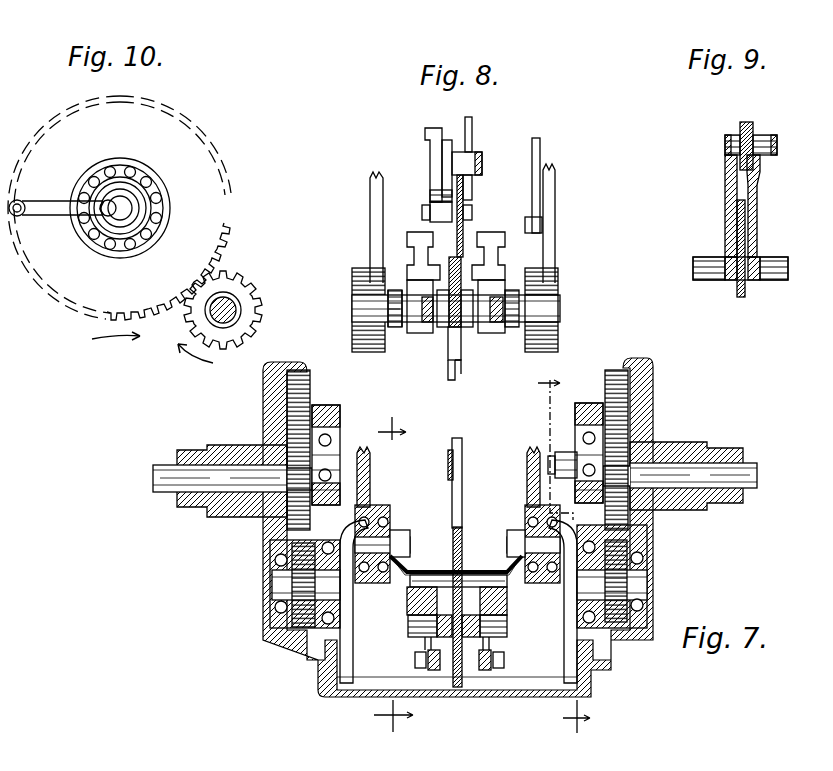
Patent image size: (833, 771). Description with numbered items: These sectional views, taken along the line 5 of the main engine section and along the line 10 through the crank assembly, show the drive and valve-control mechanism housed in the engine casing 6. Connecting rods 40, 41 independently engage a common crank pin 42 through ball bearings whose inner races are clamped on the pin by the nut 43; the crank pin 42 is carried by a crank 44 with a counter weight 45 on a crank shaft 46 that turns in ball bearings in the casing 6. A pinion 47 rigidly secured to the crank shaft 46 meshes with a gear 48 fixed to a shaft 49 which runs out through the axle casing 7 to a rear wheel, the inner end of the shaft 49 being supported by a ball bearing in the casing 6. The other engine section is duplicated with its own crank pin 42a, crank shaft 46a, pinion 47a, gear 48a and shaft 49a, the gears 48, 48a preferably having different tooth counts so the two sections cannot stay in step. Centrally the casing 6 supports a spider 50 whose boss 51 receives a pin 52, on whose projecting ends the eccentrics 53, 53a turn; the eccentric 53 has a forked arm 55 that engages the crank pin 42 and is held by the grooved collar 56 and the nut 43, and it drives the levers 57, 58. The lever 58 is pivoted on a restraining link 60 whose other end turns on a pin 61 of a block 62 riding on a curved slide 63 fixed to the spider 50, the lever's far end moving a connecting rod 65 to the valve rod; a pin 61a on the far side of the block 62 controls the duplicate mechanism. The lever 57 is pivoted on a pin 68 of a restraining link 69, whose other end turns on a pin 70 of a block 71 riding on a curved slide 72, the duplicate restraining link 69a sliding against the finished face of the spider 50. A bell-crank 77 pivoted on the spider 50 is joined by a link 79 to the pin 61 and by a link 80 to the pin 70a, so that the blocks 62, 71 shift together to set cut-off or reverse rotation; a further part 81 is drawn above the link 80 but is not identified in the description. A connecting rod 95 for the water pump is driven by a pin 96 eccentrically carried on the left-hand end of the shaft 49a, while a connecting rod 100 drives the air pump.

In FIG. 7, the section line 5— 5 is at (393, 574).
In FIG. 7, the casing 6 is at (338, 697).
In FIG. 7, the axle casing 7 is at (185, 455).
In FIG. 7, the section line 10— 10 is at (560, 560).
In FIG. 7, the connecting rod 40 is at (370, 505).
In FIG. 7, the connecting rod 41 is at (370, 467).
In FIG. 7, the crank pin 42 is at (377, 543).
In FIG. 7, the crank pin 42a is at (530, 540).
In FIG. 7, the nut 43 is at (407, 537).
In FIG. 7, the crank 44 is at (349, 592).
In FIG. 7, the counter weight 45 is at (353, 665).
In FIG. 7, the crank shaft 46 is at (300, 640).
In FIG. 10, the crank shaft 46a is at (241, 307).
In FIG. 7, the crank shaft 46a is at (622, 575).
In FIG. 7, the pinion 47 is at (293, 581).
In FIG. 10, the pinion 47a is at (237, 284).
In FIG. 7, the pinion 47a is at (628, 545).
In FIG. 7, the gear 48 is at (308, 378).
In FIG. 10, the gear 48a is at (219, 238).
In FIG. 7, the gear 48a is at (630, 394).
In FIG. 7, the shaft 49 is at (168, 488).
In FIG. 10, the shaft 49a is at (124, 204).
In FIG. 7, the shaft 49a is at (752, 478).
In FIG. 8, the spider 50 is at (461, 355).
In FIG. 9, the spider 50 is at (739, 292).
In FIG. 7, the spider 50 is at (466, 672).
In FIG. 7, the boss 51 is at (438, 575).
In FIG. 7, the pin 52 is at (466, 580).
In FIG. 8, the eccentric 53 is at (407, 288).
In FIG. 7, the eccentric 53 is at (409, 598).
In FIG. 8, the eccentric 53a is at (510, 328).
In FIG. 7, the eccentric 53a is at (500, 605).
In FIG. 8, the forked arm 55 is at (398, 330).
In FIG. 7, the forked arm 55 is at (404, 562).
In FIG. 8, the grooved collar 56 is at (388, 302).
In FIG. 7, the grooved collar 56 is at (395, 533).
In FIG. 8, the lever 57 is at (431, 330).
In FIG. 7, the lever 57 is at (413, 620).
In FIG. 8, the lever 58 is at (412, 333).
In FIG. 7, the lever 58 is at (409, 572).
In FIG. 8, the restraining link 60 is at (432, 240).
In FIG. 8, the pin 61 is at (423, 212).
In FIG. 8, the pin 61a is at (472, 212).
In FIG. 8, the block 62 is at (448, 257).
In FIG. 8, the curved slide 63 is at (449, 375).
In FIG. 7, the curved slide 63 is at (450, 458).
In FIG. 8, the connecting rod 65 is at (408, 241).
In FIG. 9, the pin 68 is at (696, 266).
In FIG. 7, the pin 68 is at (414, 661).
In FIG. 9, the restraining link 69 is at (727, 203).
In FIG. 9, the restraining link 69a is at (757, 203).
In FIG. 9, the pin 70 is at (727, 144).
In FIG. 9, the pin 70a is at (776, 145).
In FIG. 9, the block 71 is at (745, 128).
In FIG. 8, the curved slide 72 is at (464, 180).
In FIG. 8, the bell-crank 77 is at (446, 165).
In FIG. 8, the link 79 is at (430, 167).
In FIG. 8, the link 80 is at (482, 163).
In FIG. 9, the link 80 is at (762, 140).
In FIG. 8, the pin 81 is at (473, 130).
In FIG. 10, the connecting rod 95 is at (46, 214).
In FIG. 7, the connecting rod 95 is at (570, 414).
In FIG. 10, the pin 96 is at (102, 216).
In FIG. 7, the pin 96 is at (553, 455).
In FIG. 8, the connecting rod 100 is at (541, 148).